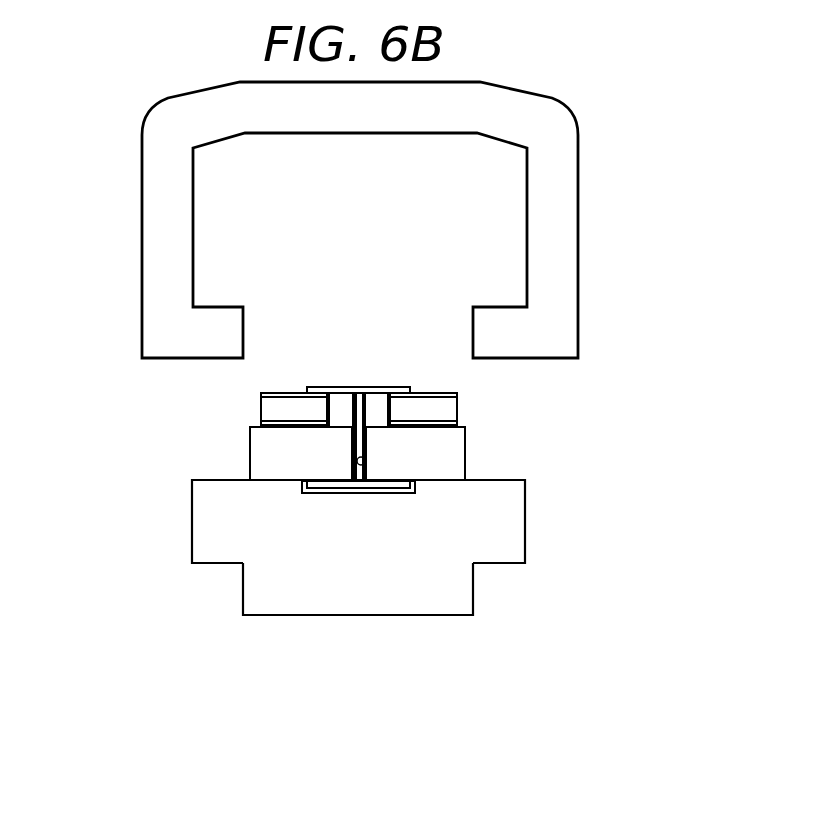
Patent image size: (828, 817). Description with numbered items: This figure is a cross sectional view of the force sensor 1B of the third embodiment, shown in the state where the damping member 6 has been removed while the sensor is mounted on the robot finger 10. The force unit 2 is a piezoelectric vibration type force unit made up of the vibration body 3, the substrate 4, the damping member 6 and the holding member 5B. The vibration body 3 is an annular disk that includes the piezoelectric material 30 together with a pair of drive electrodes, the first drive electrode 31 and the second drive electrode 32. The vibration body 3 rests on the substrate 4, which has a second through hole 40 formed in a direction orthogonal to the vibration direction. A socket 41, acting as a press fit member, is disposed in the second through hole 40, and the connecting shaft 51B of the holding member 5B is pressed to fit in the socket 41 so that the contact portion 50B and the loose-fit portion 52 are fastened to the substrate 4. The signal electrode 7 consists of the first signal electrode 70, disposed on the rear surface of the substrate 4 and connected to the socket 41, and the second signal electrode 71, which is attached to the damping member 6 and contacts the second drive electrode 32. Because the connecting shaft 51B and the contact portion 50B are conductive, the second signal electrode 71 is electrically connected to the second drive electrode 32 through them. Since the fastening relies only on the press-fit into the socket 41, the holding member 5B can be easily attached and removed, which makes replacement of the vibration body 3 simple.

The force sensor 1B is at (596, 356).
The force unit 2 is at (442, 379).
The vibration body 3 is at (282, 331).
The piezoelectric material 30 is at (286, 412).
The first drive electrode 31 is at (272, 420).
The second drive electrode 32 is at (295, 397).
The substrate 4 is at (455, 472).
The second through hole 40 is at (368, 447).
The socket 41 is at (368, 470).
The holding member 5B is at (384, 378).
The contact portion 50B is at (416, 373).
The connecting shaft 51B is at (362, 413).
The loose-fit portion 52 is at (345, 403).
The damping member 6 is at (562, 231).
The signal electrode 7 is at (257, 473).
The first signal electrode 70 is at (322, 488).
The second signal electrode 71 is at (283, 430).
The robot finger 10 is at (276, 600).